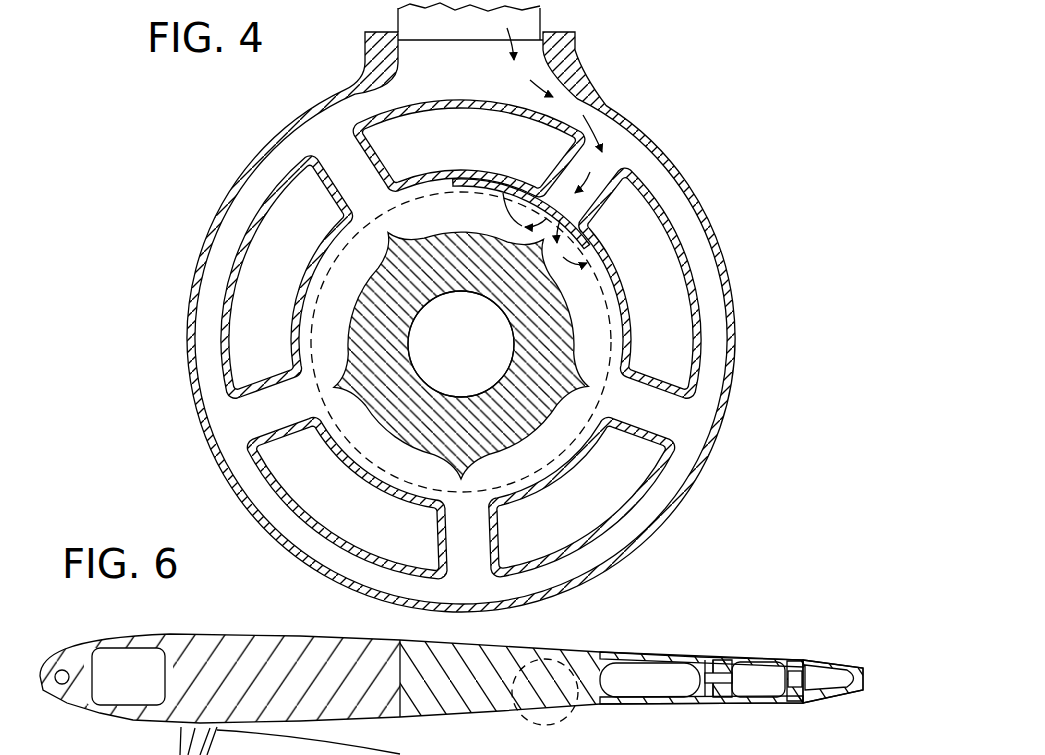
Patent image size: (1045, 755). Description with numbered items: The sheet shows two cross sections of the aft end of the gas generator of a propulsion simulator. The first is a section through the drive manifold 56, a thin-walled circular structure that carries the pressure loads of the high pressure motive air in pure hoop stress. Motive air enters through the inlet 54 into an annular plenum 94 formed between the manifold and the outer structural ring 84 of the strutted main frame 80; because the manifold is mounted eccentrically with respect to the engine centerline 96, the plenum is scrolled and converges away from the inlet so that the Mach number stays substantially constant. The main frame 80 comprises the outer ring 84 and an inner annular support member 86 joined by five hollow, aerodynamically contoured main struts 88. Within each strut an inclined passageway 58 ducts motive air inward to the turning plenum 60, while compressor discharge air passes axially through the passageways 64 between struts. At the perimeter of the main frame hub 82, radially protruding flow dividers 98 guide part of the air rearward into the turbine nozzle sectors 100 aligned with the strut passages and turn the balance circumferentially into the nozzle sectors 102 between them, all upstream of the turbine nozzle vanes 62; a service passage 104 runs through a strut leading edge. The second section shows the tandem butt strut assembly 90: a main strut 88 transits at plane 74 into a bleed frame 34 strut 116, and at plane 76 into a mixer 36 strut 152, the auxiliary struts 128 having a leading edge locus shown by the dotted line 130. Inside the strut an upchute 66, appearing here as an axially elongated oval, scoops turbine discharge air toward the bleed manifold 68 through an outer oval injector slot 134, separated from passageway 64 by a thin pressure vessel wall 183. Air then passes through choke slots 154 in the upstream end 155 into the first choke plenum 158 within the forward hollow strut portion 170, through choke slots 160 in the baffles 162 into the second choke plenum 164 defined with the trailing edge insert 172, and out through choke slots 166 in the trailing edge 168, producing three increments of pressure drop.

In FIG. 6, the bleed frame 34 is at (460, 722).
In FIG. 6, the multichoke mixer 36 is at (778, 710).
In FIG. 4, the inlet 54 is at (470, 37).
In FIG. 4, the drive manifold 56 is at (615, 100).
In FIG. 4, the inclined passageways 58 is at (363, 182).
In FIG. 6, the inclined passageways 58 is at (143, 687).
In FIG. 4, the turning plenum 60 is at (553, 455).
In FIG. 4, the turbine nozzle vanes 62 is at (315, 305).
In FIG. 4, the passageways 64 is at (478, 149).
In FIG. 6, the upchutes 66 is at (663, 688).
In FIG. 6, the bleed manifold 68 is at (175, 745).
In FIG. 6, the plane 74 is at (408, 653).
In FIG. 6, the plane 76 is at (723, 657).
In FIG. 4, the strutted main frame 80 is at (693, 263).
In FIG. 6, the strutted main frame 80 is at (280, 627).
In FIG. 4, the main frame hub 82 is at (565, 335).
In FIG. 4, the outer structural ring 84 is at (437, 100).
In FIG. 4, the inner annular support member 86 is at (460, 171).
In FIG. 4, the main struts 88 is at (375, 163).
In FIG. 6, the main struts 88 is at (233, 638).
In FIG. 6, the tandem butt strut assembly 90 is at (73, 715).
In FIG. 4, the annular plenum 94 is at (333, 134).
In FIG. 4, the engine centerline 96 is at (477, 370).
In FIG. 4, the flow dividers 98 is at (447, 477).
In FIG. 4, the turbine nozzle sectors 100 is at (590, 238).
In FIG. 4, the turbine nozzle sectors 102 is at (483, 193).
In FIG. 6, the instrumentation and lubrication service passage 104 is at (68, 668).
In FIG. 6, the struts 116 is at (483, 655).
In FIG. 6, the auxiliary aerodynamically contoured struts 128 is at (573, 700).
In FIG. 6, the dotted line 130 is at (545, 703).
In FIG. 6, the outer oval injector slot 134 is at (712, 662).
In FIG. 6, the hollow radial struts 152 is at (790, 705).
In FIG. 6, the choke slots 154 is at (737, 662).
In FIG. 6, the upstream end 155 is at (713, 703).
In FIG. 6, the first choke plenum 158 is at (773, 690).
In FIG. 6, the choke slots 160 is at (807, 660).
In FIG. 6, the baffles 162 is at (792, 703).
In FIG. 6, the second choke plenum 164 is at (843, 690).
In FIG. 6, the choke slots 166 is at (867, 677).
In FIG. 6, the trailing edge 168 is at (865, 665).
In FIG. 6, the forward hollow strut portion 170 is at (780, 657).
In FIG. 6, the trailing edge inserts 172 is at (860, 652).
In FIG. 6, the pressure vessel walls 183 is at (645, 657).